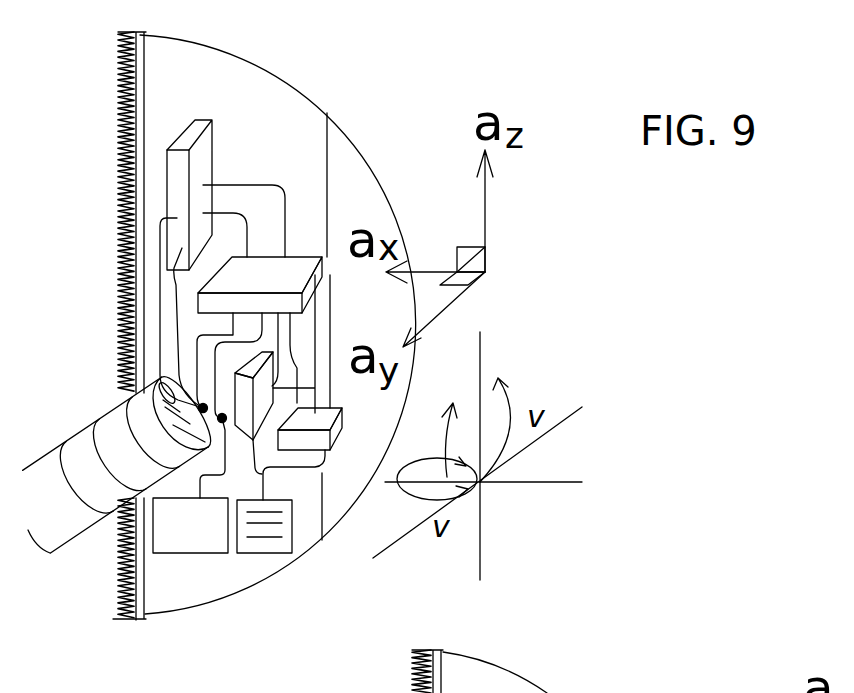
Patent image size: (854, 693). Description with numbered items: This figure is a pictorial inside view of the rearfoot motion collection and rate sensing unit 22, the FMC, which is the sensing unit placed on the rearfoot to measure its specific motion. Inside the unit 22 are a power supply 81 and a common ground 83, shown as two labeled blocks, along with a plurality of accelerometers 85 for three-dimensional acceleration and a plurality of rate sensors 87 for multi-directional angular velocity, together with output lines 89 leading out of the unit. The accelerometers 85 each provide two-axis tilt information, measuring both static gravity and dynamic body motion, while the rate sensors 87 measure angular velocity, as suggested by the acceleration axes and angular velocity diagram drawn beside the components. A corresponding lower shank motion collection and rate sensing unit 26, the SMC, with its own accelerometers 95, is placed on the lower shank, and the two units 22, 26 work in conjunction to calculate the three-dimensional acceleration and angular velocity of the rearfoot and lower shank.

The rearfoot motion collection and rate sensing unit 22 is at (280, 162).
The accelerometers 85 is at (207, 143).
The rate sensors 87 is at (268, 378).
The output lines 89 is at (70, 438).
The power supply 81 is at (197, 555).
The common ground 83 is at (273, 537).
The accelerometers 95 is at (548, 692).
The lower shank motion collection and rate sensing unit 26 is at (620, 692).